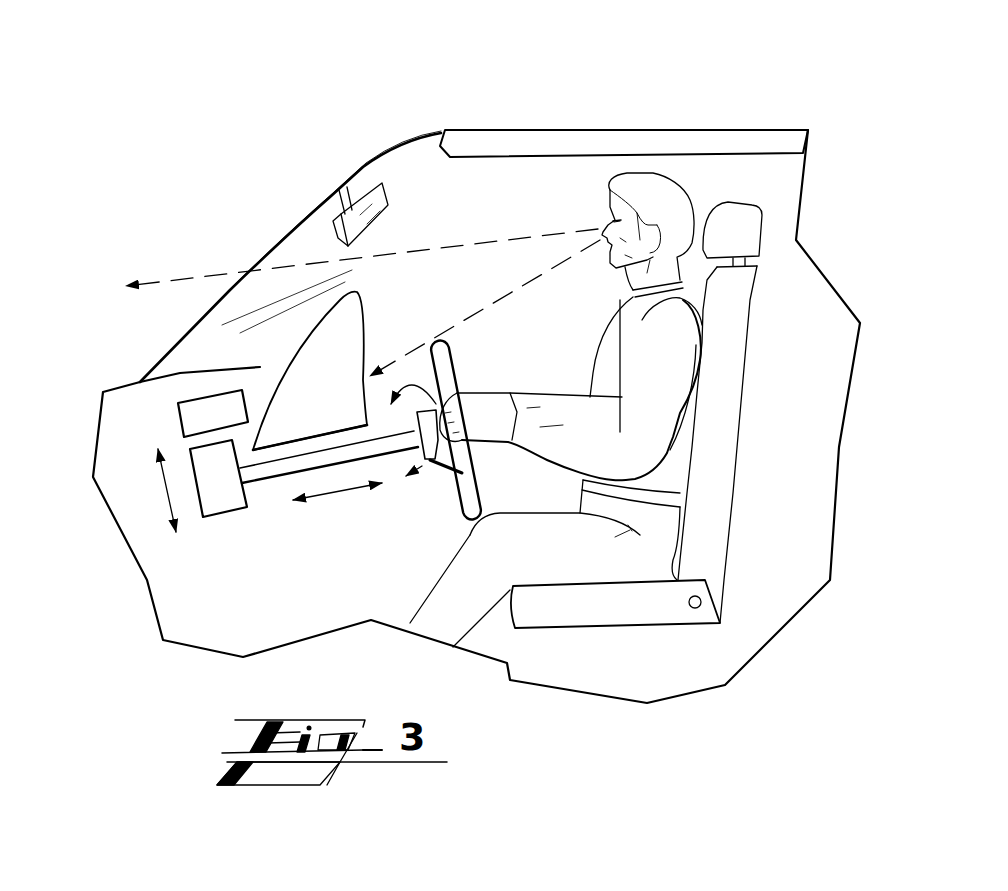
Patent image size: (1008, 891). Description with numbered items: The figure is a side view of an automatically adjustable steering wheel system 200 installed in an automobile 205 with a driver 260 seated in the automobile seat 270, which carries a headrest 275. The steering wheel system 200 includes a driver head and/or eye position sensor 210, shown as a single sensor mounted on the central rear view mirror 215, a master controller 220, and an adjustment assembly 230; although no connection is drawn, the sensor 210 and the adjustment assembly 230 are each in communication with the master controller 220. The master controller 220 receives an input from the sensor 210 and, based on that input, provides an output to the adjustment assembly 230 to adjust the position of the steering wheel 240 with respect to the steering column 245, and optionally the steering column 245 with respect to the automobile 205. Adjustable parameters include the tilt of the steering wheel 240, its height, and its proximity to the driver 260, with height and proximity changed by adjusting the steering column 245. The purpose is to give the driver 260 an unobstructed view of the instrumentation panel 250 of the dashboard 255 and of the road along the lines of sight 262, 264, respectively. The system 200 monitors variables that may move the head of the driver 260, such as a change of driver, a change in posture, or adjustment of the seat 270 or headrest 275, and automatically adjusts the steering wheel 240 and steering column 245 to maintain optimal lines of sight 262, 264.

The automatically adjustable steering wheel system 200 is at (158, 172).
The automobile 205 is at (130, 387).
The driver head and/or eye position sensor 210 is at (327, 232).
The central rear view mirror 215 is at (366, 183).
The master controller 220 is at (198, 412).
The adjustment assembly 230 is at (228, 512).
The steering wheel 240 is at (453, 367).
The steering column 245 is at (273, 482).
The instrumentation panel 250 is at (233, 390).
The dashboard 255 is at (313, 370).
The driver 260 is at (698, 180).
The line of sight 262 is at (567, 258).
The line of sight 264 is at (450, 247).
The automobile seat 270 is at (735, 487).
The headrest 275 is at (763, 227).